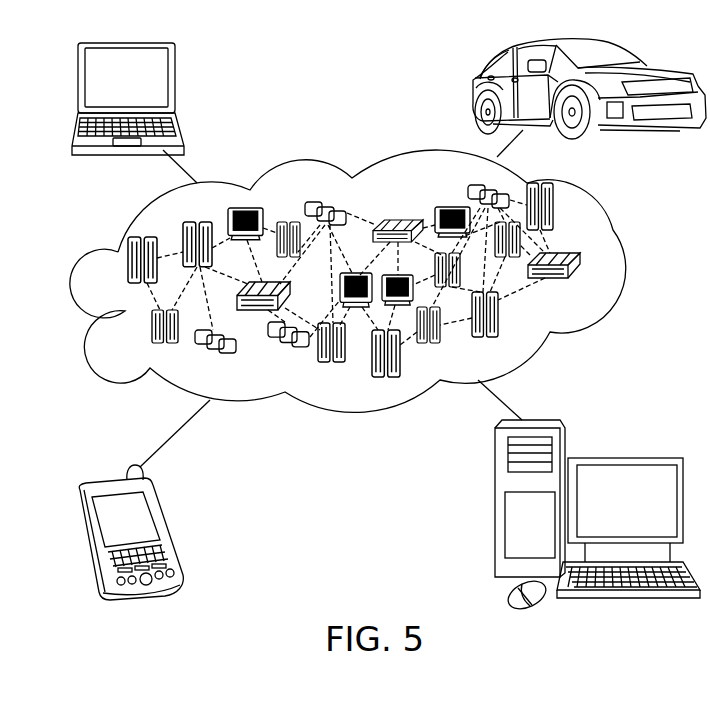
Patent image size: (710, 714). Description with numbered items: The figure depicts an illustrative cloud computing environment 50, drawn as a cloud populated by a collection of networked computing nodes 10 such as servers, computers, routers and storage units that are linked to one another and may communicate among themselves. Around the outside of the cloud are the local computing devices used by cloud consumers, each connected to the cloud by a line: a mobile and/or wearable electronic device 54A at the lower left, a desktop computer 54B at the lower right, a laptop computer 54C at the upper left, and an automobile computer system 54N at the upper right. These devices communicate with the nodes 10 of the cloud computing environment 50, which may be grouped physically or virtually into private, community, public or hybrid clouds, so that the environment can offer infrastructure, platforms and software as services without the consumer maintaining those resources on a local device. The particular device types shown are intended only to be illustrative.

The cloud computing nodes 10 is at (588, 286).
The cloud computing environment 50 is at (598, 265).
The mobile and/or wearable electronic device 54A is at (170, 528).
The desktop computer 54B is at (623, 458).
The laptop computer 54C is at (174, 84).
The automobile computer system 54N is at (471, 93).